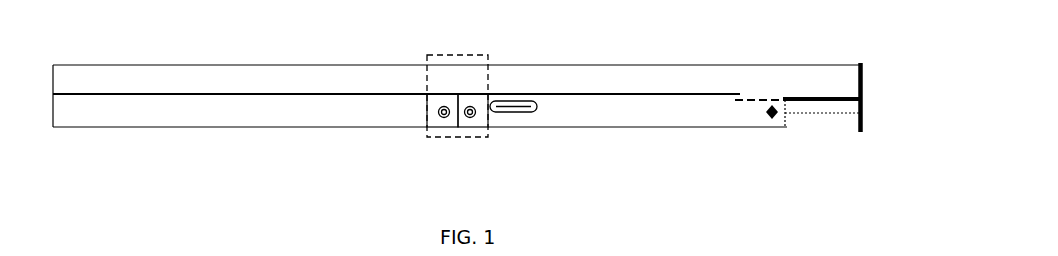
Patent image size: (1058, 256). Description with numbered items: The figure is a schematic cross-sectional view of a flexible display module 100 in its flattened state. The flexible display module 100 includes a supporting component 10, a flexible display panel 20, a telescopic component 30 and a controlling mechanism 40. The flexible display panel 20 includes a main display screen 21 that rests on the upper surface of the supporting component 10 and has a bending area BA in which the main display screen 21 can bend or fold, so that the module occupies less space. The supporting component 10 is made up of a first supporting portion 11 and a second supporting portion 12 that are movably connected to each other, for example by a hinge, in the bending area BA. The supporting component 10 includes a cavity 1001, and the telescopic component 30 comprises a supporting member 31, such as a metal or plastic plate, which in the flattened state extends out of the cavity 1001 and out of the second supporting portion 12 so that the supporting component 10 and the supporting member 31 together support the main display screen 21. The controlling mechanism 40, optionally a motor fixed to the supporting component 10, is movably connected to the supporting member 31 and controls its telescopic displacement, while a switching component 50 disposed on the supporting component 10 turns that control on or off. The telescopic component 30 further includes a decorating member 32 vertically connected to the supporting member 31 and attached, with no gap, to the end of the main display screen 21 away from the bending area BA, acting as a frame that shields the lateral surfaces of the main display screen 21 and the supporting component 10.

The flexible display module 100 is at (180, 34).
The supporting component 10 is at (420, 155).
The first supporting portion 11 is at (387, 113).
The second supporting portion 12 is at (637, 138).
The bending area BA is at (455, 54).
The switching component 50 is at (503, 107).
The flexible display panel 20 is at (456, 47).
The main display screen 21 is at (604, 84).
The cavity 1001 is at (735, 94).
The controlling mechanism 40 is at (768, 113).
The telescopic component 30 is at (841, 134).
The supporting member 31 is at (822, 101).
The decorating member 32 is at (863, 100).